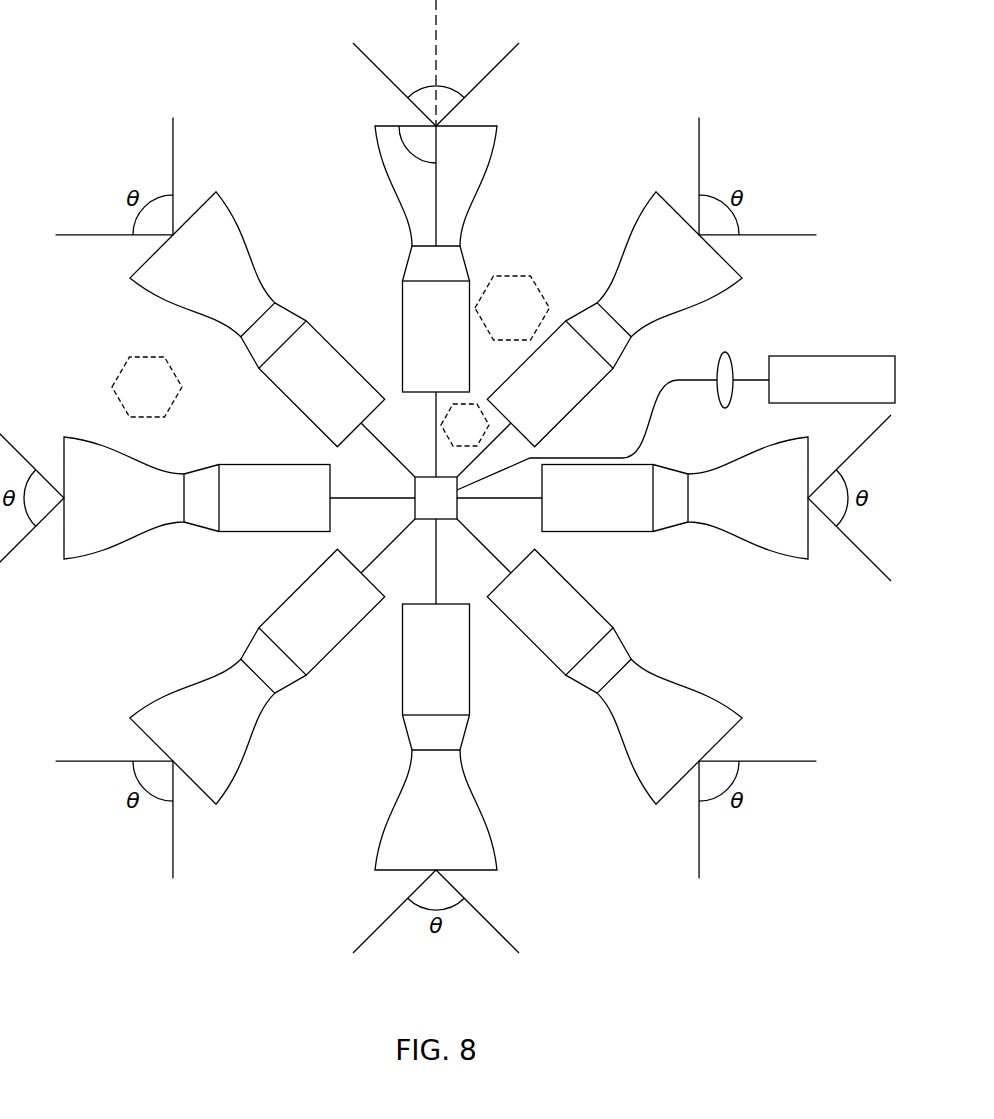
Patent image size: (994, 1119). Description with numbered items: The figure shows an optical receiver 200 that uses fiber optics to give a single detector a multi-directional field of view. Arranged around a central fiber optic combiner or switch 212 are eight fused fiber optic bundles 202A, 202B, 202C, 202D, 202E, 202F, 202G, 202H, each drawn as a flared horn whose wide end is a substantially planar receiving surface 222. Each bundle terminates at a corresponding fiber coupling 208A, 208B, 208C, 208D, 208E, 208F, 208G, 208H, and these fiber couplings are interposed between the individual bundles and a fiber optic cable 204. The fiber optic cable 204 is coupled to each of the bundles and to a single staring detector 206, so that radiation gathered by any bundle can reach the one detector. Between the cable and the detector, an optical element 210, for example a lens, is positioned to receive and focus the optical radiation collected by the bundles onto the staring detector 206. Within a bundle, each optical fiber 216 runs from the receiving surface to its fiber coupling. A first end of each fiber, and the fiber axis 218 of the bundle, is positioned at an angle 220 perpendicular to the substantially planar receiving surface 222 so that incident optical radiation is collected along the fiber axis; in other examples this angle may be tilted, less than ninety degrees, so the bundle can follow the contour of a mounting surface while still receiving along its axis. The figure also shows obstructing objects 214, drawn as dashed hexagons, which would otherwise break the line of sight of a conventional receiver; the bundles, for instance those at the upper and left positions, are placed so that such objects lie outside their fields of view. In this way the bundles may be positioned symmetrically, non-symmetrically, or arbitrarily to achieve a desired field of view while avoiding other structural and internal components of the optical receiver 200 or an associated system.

The optical receiver 200 is at (786, 90).
The fused fiber optic bundle 202A is at (497, 153).
The fused fiber optic bundle 202B is at (640, 216).
The fused fiber optic bundle 202C is at (780, 560).
The fused fiber optic bundle 202D is at (722, 706).
The fused fiber optic bundle 202E is at (492, 820).
The fused fiber optic bundle 202F is at (230, 780).
The fused fiber optic bundle 202G is at (90, 558).
The fused fiber optic bundle 202H is at (148, 297).
The fiber optic cable 204 is at (373, 440).
The staring detector 206 is at (835, 356).
The fiber coupling 208A is at (402, 305).
The fiber coupling 208B is at (567, 413).
The fiber coupling 208C is at (600, 534).
The fiber coupling 208D is at (575, 586).
The fiber coupling 208E is at (469, 678).
The fiber coupling 208F is at (320, 660).
The fiber coupling 208G is at (273, 534).
The fiber coupling 208H is at (295, 408).
The optical element 210 is at (717, 365).
The fiber optic combiner or switch 212 is at (433, 505).
The obstructing object 214 is at (515, 277).
The optical fiber 216 is at (447, 183).
The fiber axis 218 is at (441, 17).
The angle 220 is at (405, 163).
The substantially planar receiving surface 222 is at (480, 110).